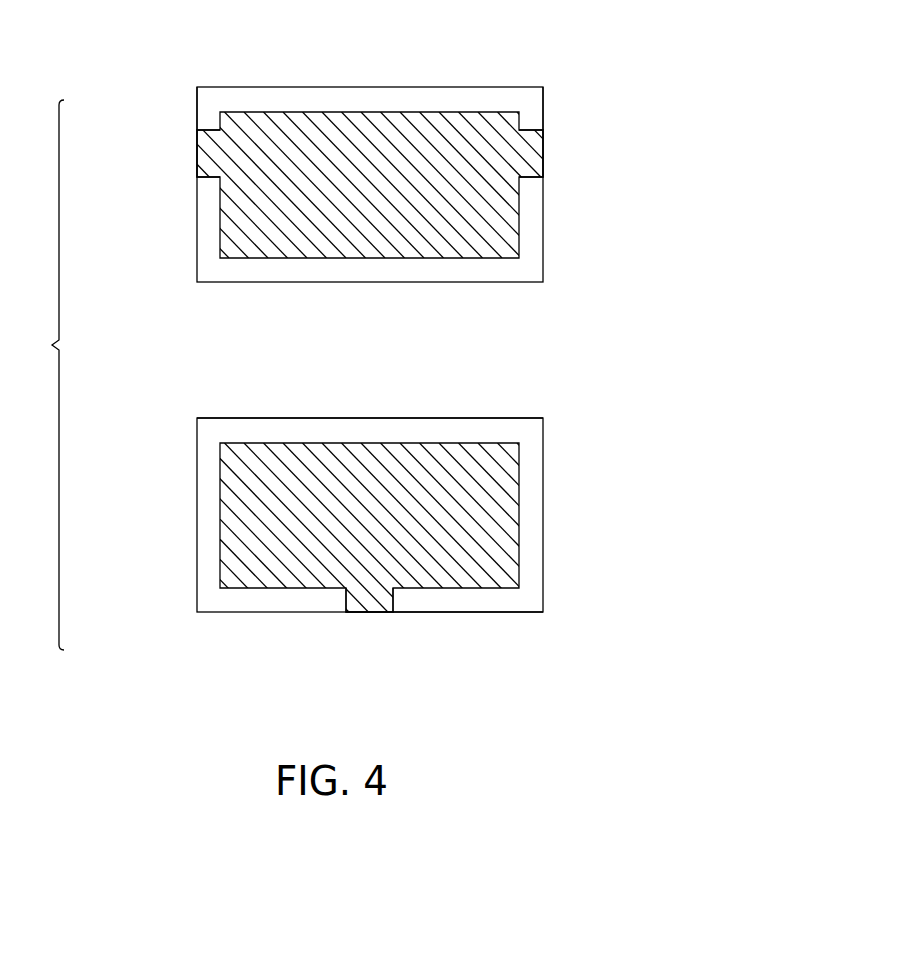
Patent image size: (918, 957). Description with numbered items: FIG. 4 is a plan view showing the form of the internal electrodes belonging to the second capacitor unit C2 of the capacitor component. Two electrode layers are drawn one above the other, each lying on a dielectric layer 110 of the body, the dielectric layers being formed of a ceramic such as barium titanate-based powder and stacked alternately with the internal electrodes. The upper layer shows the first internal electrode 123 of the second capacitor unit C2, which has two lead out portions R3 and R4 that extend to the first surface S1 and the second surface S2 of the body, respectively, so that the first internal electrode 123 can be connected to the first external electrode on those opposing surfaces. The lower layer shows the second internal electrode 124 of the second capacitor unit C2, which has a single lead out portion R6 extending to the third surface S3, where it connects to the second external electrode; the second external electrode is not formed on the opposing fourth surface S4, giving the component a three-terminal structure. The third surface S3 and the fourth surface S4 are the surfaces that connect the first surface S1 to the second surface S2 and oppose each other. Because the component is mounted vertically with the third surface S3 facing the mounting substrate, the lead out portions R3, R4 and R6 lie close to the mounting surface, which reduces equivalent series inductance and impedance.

The dielectric layer 110 is at (203, 245).
The first internal electrode 123 is at (320, 142).
The second internal electrode 124 is at (320, 458).
The lead out portion R3 is at (208, 153).
The lead out portion R4 is at (535, 155).
The lead out portion R6 is at (372, 598).
The first surface S1 is at (196, 108).
The second surface S2 is at (545, 108).
The third surface S3 is at (471, 614).
The fourth surface S4 is at (457, 410).
The second capacitor unit C2 is at (38, 375).